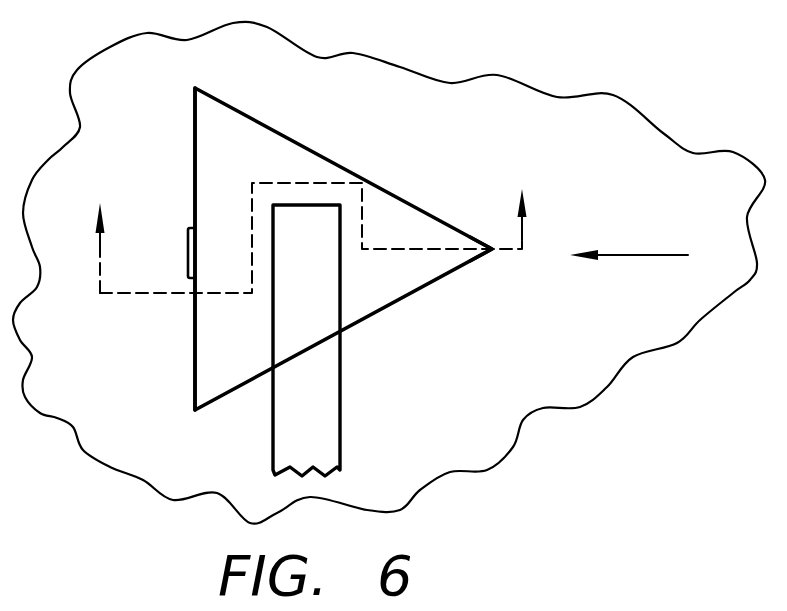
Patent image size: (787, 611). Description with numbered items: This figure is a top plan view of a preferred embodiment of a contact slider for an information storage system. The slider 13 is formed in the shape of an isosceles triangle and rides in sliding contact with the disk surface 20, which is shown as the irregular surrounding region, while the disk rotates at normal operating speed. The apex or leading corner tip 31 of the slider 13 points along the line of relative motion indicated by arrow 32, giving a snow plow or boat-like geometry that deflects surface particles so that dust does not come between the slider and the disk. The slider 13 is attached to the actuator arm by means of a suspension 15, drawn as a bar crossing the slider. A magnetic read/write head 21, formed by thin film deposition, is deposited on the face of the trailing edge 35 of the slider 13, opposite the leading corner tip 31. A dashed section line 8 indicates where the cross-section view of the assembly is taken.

The section line 8- 8 is at (313, 224).
The slider 13 is at (396, 193).
The suspension 15 is at (342, 395).
The disk surface 20 is at (483, 336).
The magnetic read/write head 21 is at (188, 250).
The leading corner tip 31 is at (494, 251).
The arrow 32 is at (638, 255).
The trailing edge 35 is at (194, 368).